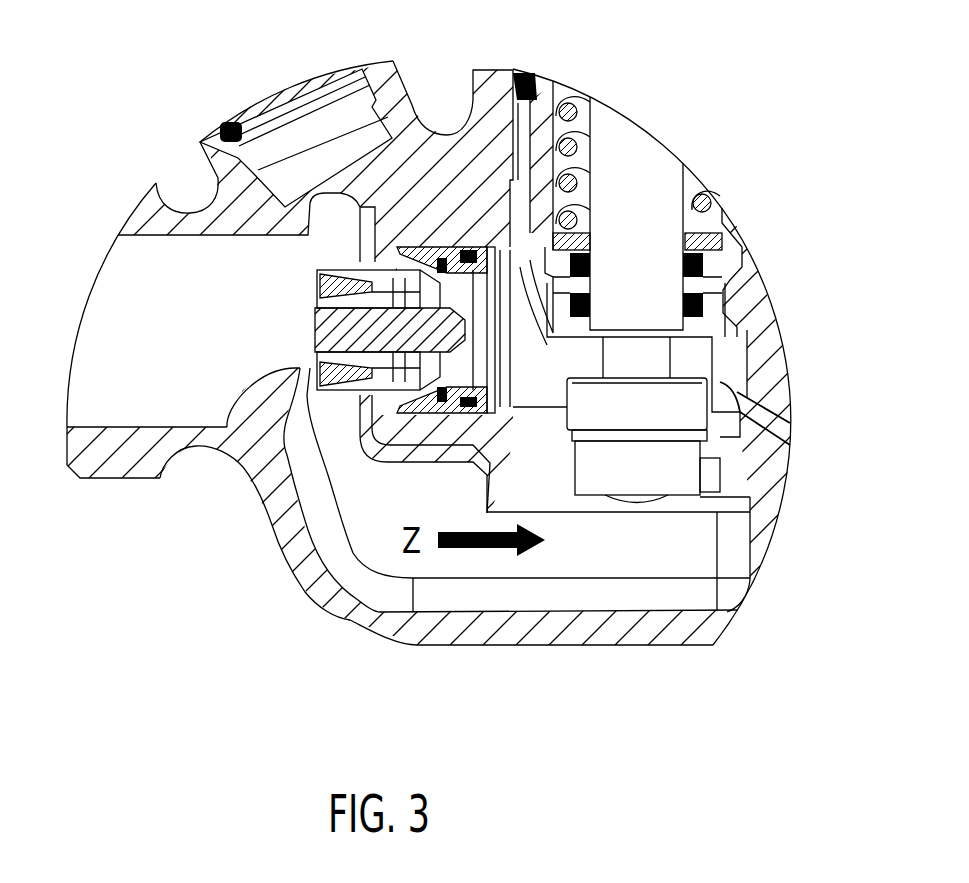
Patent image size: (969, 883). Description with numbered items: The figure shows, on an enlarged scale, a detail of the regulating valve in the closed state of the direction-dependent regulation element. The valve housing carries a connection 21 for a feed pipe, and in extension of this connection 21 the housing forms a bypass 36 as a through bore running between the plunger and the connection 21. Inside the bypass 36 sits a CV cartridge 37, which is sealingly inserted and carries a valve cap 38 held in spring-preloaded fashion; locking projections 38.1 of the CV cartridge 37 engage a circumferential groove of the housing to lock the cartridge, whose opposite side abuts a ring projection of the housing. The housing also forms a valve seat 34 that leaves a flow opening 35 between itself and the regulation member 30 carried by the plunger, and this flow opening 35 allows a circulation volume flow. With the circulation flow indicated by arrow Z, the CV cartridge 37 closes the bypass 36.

The connection for a feed pipe 21 is at (98, 465).
The regulation member 30 is at (692, 400).
The valve seat 34 is at (718, 457).
The flow opening 35 is at (711, 472).
The bypass 36 is at (357, 424).
The CV cartridge 37 is at (303, 337).
The valve cap 38 is at (313, 318).
The locking projections 38.1 is at (400, 247).